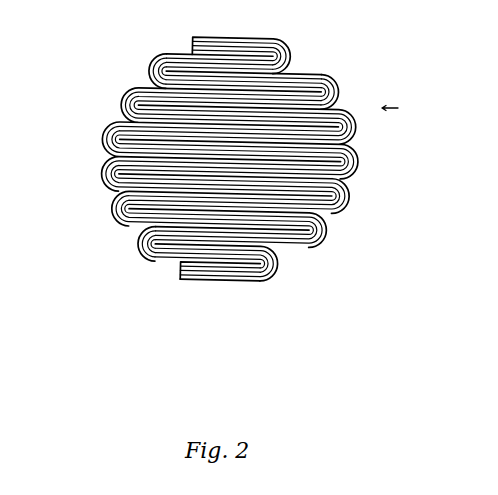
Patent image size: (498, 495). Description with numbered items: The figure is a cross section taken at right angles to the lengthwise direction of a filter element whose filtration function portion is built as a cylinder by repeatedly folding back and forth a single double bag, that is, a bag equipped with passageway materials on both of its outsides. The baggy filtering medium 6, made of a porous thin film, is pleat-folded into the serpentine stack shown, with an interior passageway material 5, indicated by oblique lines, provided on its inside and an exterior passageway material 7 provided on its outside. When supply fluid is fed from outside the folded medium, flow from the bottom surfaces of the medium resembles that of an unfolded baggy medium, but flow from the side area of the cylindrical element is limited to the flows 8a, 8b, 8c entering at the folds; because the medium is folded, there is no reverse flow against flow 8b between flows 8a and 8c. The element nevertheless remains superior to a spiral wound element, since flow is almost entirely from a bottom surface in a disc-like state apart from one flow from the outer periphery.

The interior passageway material 5 is at (142, 221).
The baggy filtering medium 6 is at (183, 270).
The exterior passageway material 7 is at (213, 278).
The side flow 8a is at (98, 50).
The side flow 8b is at (369, 80).
The side flow 8c is at (88, 80).